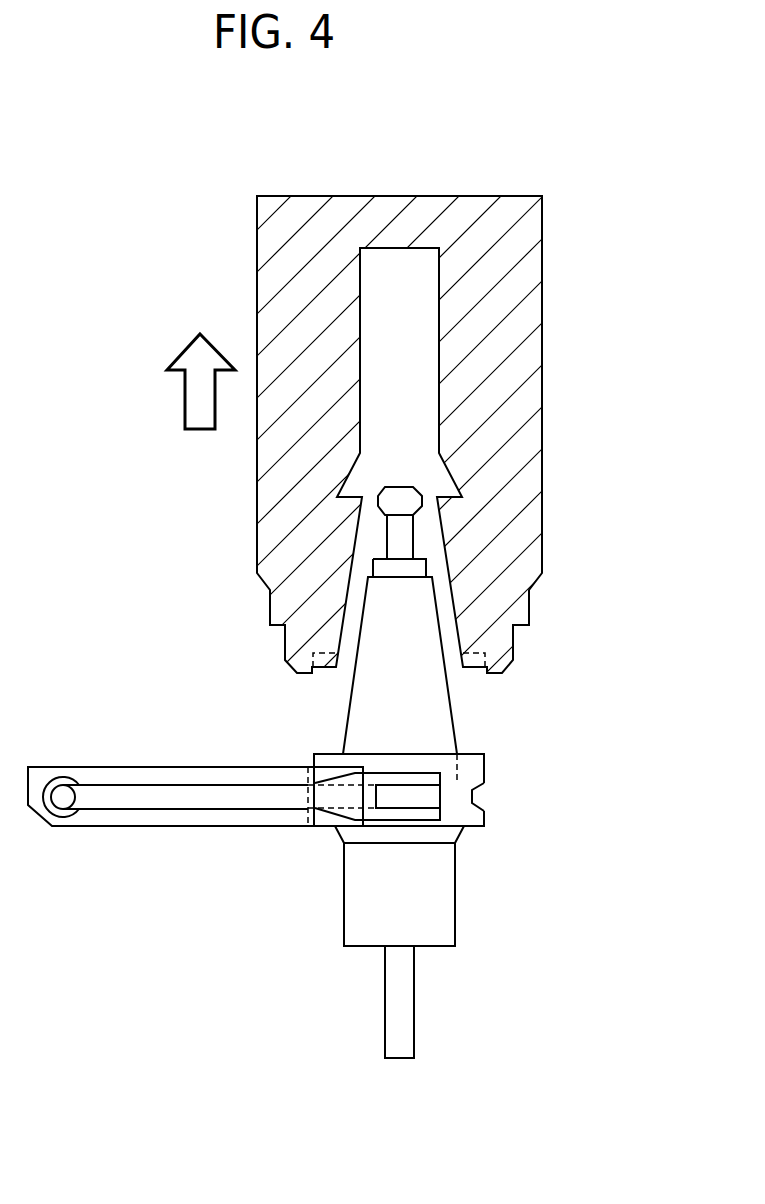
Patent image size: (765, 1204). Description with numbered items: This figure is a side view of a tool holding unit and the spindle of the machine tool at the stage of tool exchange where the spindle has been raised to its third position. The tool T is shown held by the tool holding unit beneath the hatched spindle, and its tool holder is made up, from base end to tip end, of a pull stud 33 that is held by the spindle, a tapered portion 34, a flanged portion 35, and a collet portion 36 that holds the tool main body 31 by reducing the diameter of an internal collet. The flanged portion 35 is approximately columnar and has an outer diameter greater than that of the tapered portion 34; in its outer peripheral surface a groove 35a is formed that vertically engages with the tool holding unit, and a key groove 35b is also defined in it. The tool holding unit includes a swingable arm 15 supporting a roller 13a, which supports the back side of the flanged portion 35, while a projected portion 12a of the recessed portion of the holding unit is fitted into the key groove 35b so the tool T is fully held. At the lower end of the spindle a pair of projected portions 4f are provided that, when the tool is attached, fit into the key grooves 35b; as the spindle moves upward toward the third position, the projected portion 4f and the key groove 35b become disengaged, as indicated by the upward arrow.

The projected portion 4f is at (330, 670).
The pull stud 33 is at (420, 491).
The tapered portion 34 is at (453, 715).
The flanged portion 35 is at (484, 818).
The groove 35a is at (485, 797).
The key groove 35b is at (338, 785).
The arm 15 is at (197, 809).
The projected portion 12a is at (312, 760).
The roller 13a is at (422, 795).
The tool T is at (409, 950).
The collet portion 36 is at (455, 908).
The tool main body 31 is at (414, 1007).